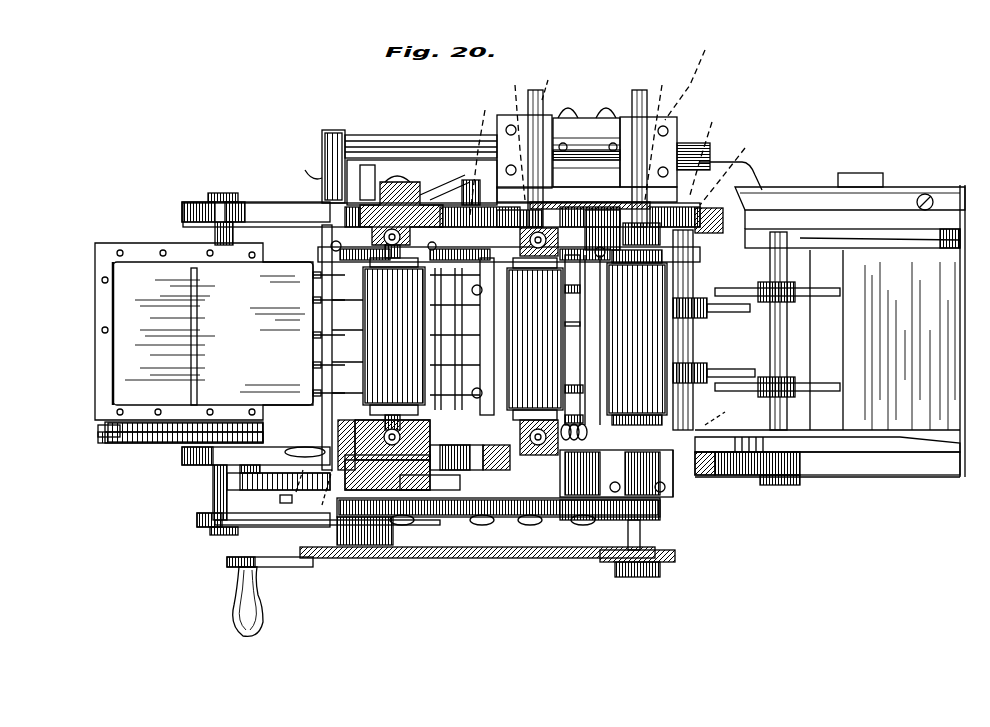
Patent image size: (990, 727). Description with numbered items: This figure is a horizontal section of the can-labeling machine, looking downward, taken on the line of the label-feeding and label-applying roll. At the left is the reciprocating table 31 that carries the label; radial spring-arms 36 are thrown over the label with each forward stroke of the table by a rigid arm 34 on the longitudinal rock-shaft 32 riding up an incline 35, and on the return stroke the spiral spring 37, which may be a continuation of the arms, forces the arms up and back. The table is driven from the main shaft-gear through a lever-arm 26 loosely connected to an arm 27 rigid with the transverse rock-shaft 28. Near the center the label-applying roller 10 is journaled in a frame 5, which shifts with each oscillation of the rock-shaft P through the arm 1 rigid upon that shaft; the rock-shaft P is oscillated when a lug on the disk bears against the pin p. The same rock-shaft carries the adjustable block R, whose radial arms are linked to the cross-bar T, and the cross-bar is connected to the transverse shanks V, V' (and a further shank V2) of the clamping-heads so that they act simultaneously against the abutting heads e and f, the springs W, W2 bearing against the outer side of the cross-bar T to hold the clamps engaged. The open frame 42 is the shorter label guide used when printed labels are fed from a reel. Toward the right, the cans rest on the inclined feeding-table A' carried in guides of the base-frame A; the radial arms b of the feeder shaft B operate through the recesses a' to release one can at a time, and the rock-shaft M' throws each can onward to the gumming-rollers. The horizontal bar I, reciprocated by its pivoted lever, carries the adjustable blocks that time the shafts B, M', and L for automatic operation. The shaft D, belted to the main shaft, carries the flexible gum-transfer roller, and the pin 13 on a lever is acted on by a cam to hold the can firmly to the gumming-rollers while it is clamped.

The table 31 is at (204, 331).
The radial spring-arms 36 is at (205, 345).
The longitudinal rock-shaft 32 is at (140, 442).
The spiral spring 37 is at (178, 442).
The pin p is at (256, 198).
The rock-shaft P is at (409, 161).
The arm 1 is at (420, 183).
The rod v' is at (477, 154).
The open frame 42 is at (462, 336).
The roller 10 is at (535, 339).
The shaft L is at (572, 329).
The springs W is at (524, 134).
The transverse shank V is at (539, 145).
The adjustable block R is at (586, 147).
The frame 5 is at (586, 167).
The transverse shank V' is at (648, 146).
The springs W2 is at (688, 76).
The cross-bar T is at (719, 150).
The transverse shank V2 is at (728, 167).
The horizontal bar I is at (850, 320).
The shaft B is at (806, 331).
The inclined feeding-table A' is at (910, 346).
The radial arms b is at (777, 286).
The recesses a' is at (787, 353).
The rock-shaft M' is at (711, 322).
The base-frame A is at (827, 477).
The abutting head f is at (528, 437).
The abutting head e is at (675, 500).
The pin 13 is at (415, 514).
The shaft D is at (640, 535).
The transverse rock-shaft 28 is at (213, 478).
The incline 35 is at (278, 477).
The rigid arm 34 is at (321, 492).
The arm 27 is at (263, 516).
The lever-arm 26 is at (325, 529).